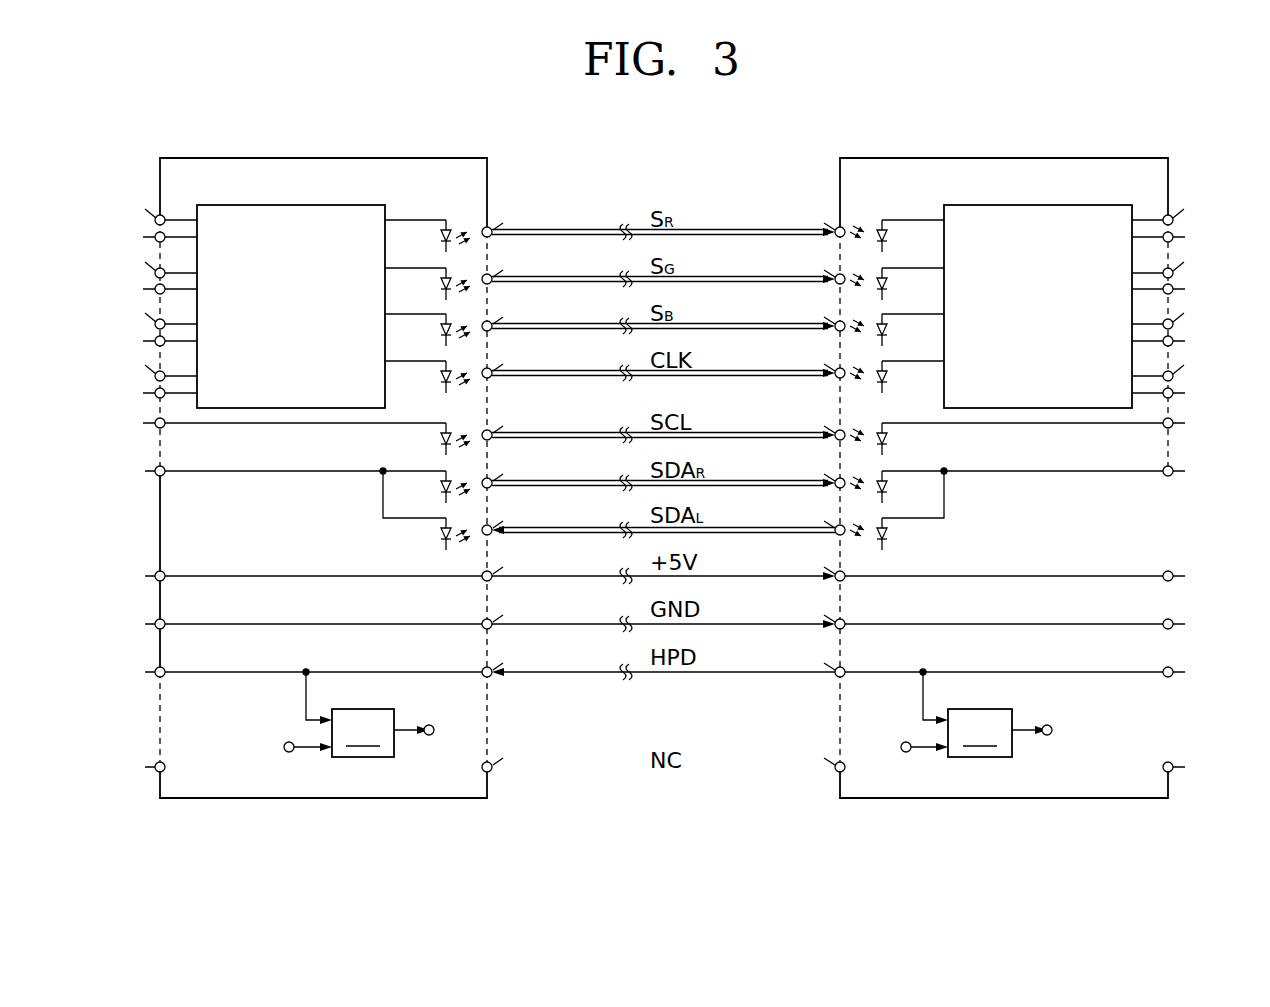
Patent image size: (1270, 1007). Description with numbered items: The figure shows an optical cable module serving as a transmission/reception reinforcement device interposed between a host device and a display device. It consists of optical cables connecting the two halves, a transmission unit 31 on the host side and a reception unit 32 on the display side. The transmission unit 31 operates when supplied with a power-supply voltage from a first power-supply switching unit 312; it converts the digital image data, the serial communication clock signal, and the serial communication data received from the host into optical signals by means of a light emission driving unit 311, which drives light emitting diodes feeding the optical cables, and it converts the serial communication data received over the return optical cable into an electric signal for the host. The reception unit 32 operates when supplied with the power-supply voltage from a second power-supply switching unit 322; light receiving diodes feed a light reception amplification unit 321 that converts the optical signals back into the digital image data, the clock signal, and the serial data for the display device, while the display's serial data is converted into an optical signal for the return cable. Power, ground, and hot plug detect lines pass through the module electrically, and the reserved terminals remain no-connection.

The transmission unit 31 is at (355, 158).
The light emission driving unit 311 is at (325, 205).
The first power-supply switching unit 312 is at (354, 733).
The reception unit 32 is at (1103, 158).
The light reception amplification unit 321 is at (1073, 205).
The second power-supply switching unit 322 is at (970, 733).